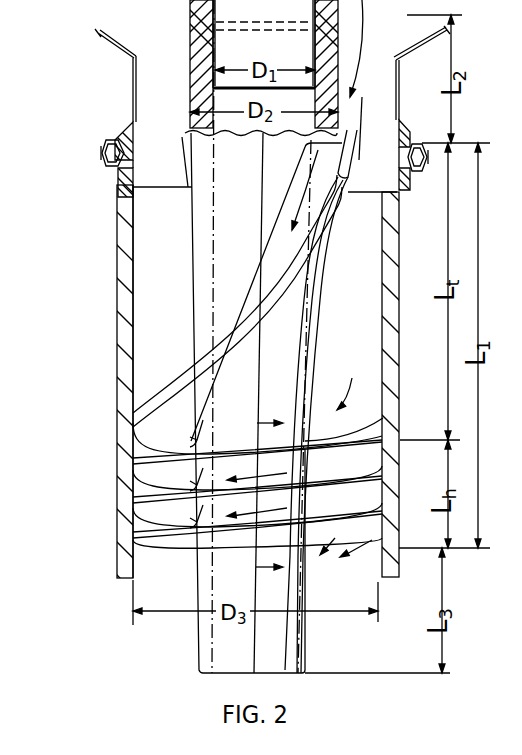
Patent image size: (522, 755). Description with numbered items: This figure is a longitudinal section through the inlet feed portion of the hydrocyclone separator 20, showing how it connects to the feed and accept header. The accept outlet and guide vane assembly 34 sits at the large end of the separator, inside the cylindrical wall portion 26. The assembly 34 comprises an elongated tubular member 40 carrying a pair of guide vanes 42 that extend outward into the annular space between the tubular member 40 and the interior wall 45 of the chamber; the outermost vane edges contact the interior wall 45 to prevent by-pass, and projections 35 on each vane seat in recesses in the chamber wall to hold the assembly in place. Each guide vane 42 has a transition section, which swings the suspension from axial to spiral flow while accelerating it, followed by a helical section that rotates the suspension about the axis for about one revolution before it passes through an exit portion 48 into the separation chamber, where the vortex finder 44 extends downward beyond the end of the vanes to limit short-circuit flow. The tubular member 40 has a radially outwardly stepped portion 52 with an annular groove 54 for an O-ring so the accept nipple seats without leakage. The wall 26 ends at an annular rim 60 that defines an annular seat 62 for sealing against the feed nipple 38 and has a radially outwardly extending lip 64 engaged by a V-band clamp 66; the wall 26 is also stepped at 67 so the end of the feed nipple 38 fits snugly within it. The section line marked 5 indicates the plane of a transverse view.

The hydrocyclone separator 20 is at (109, 240).
The cylindrical wall portion 26 is at (126, 292).
The interior wall 45 is at (135, 275).
The feed nipple 38 is at (135, 66).
The annular rim 60 is at (134, 151).
The annular seat 62 is at (104, 142).
The radially outwardly extending lip 64 is at (104, 162).
The V-band clamp 66 is at (101, 150).
The radially outwardly stepped portion of wall 67 is at (120, 180).
The annular groove 54 is at (190, 15).
The radially outwardly stepped portion 52 is at (191, 45).
The vortex finder 44 is at (308, 638).
The section line 5- 5 is at (269, 403).
The projections 35 is at (344, 188).
The guide vanes 42 is at (322, 230).
The elongated tubular member 40 is at (330, 258).
The accept outlet and guide vane assembly 34 is at (386, 307).
The exit portion of channel 48 is at (378, 545).